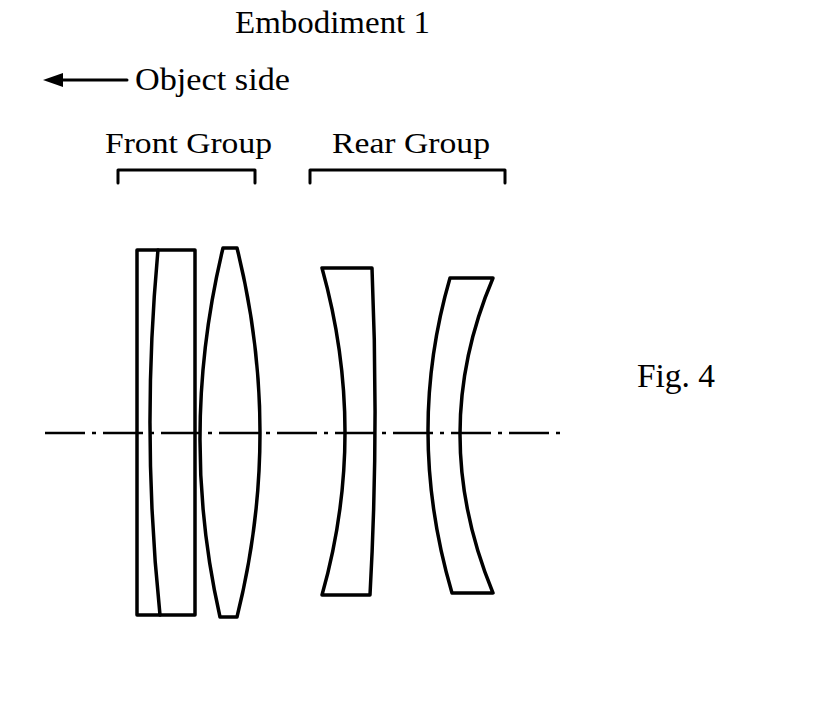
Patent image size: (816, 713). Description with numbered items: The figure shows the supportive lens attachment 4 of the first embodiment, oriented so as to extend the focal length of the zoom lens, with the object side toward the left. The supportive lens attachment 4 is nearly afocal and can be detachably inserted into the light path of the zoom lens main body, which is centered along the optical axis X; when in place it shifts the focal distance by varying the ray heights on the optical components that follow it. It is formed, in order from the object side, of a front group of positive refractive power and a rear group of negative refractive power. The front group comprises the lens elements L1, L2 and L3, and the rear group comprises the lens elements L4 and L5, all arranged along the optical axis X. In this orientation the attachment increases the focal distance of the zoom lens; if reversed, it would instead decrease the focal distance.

The supportive lens attachment 4 is at (370, 401).
The first lens element L1 is at (145, 250).
The second lens element L2 is at (185, 250).
The third lens element L3 is at (233, 247).
The fourth lens element L4 is at (351, 270).
The fifth lens element L5 is at (472, 280).
The optical axis X is at (100, 437).